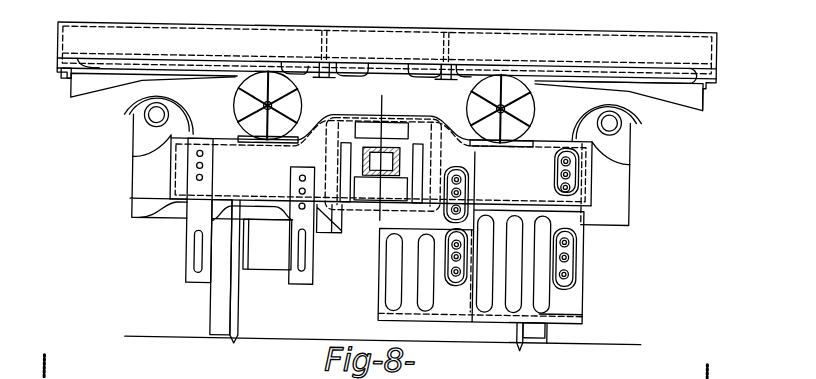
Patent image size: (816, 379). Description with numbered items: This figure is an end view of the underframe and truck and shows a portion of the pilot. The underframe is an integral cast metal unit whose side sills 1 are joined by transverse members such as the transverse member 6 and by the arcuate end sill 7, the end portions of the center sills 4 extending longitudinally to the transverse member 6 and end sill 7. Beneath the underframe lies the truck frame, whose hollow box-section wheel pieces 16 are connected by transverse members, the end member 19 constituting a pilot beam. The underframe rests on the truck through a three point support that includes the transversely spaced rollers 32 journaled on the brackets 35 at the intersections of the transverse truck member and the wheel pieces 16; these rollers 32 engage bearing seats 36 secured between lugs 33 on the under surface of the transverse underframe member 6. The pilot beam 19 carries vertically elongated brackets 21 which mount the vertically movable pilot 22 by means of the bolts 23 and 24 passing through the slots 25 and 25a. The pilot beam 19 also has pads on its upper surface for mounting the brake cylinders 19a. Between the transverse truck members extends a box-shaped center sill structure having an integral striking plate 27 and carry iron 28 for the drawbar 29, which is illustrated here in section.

The side sill 1 is at (58, 37).
The arcuate end sill 7 is at (217, 37).
The transverse member 6 is at (63, 72).
The lug 33 is at (70, 80).
The bearing seat 36 is at (102, 85).
The brake cylinder 19a is at (276, 86).
The center sill portion 4 is at (319, 66).
The roller 32 is at (135, 103).
The bracket 35 is at (153, 127).
The wheel piece 16 is at (142, 178).
The end member 19 is at (381, 158).
The striking plate 27 is at (365, 127).
The drawbar 29 is at (387, 147).
The bracket 21 is at (198, 211).
The slot 25 is at (202, 266).
The carry iron 28 is at (360, 208).
The bolt 24 is at (557, 173).
The bolt 23 is at (454, 264).
The pilot 22 is at (443, 301).
The slot 25a is at (574, 231).